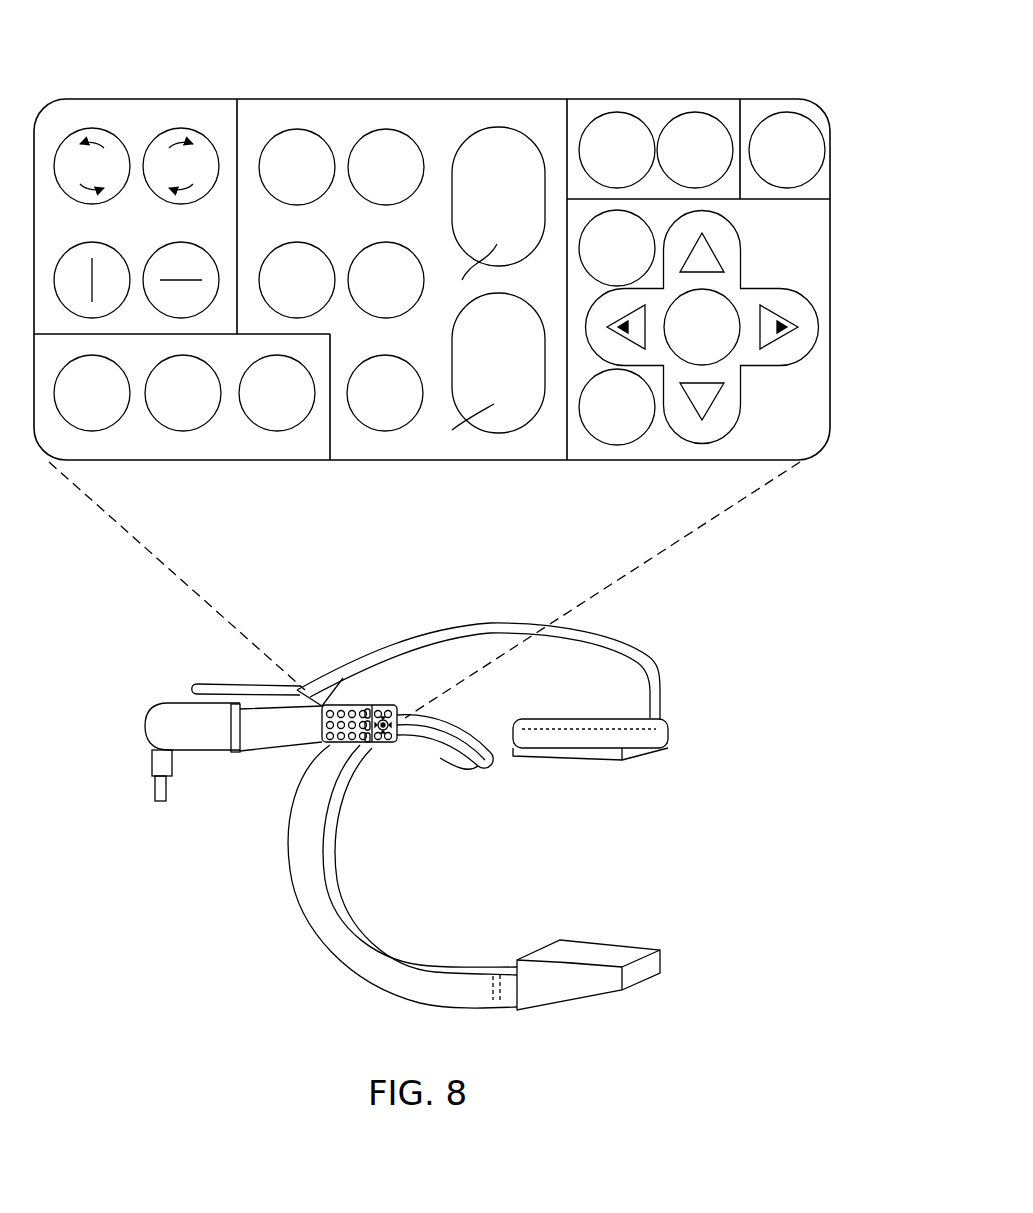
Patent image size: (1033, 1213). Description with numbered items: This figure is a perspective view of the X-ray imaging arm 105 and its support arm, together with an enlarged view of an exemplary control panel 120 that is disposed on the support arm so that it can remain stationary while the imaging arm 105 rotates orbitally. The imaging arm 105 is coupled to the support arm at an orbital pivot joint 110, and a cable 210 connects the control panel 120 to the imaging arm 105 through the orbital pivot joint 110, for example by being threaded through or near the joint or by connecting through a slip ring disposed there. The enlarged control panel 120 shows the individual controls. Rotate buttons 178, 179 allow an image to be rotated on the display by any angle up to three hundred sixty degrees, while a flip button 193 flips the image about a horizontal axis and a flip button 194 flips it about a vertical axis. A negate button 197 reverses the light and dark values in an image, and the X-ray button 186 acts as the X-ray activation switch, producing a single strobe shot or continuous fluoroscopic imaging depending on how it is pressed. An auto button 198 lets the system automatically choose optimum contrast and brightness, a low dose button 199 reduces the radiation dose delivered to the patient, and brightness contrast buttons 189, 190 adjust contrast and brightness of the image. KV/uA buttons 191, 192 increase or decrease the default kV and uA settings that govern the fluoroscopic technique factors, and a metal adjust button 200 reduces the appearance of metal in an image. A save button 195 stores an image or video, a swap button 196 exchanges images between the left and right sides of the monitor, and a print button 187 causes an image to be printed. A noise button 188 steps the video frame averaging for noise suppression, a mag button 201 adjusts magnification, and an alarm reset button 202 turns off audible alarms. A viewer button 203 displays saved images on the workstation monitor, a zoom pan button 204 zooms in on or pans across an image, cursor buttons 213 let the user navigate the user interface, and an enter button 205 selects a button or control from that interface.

The control panel 120 is at (120, 52).
The rotate button 179 is at (115, 146).
The rotate button 178 is at (204, 146).
The flip button 194 is at (115, 262).
The flip button 193 is at (190, 248).
The negate button 197 is at (320, 148).
The X-ray button 186 is at (410, 148).
The auto button 198 is at (325, 262).
The low dose button 199 is at (395, 248).
The brightness contrast button 189 is at (505, 128).
The brightness contrast button 190 is at (467, 270).
The KV/uA button 191 is at (505, 320).
The KV/uA button 192 is at (458, 430).
The metal adjust button 200 is at (387, 363).
The save button 195 is at (88, 426).
The swap button 196 is at (178, 426).
The print button 187 is at (268, 426).
The noise button 188 is at (640, 130).
The mag button 201 is at (696, 120).
The alarm reset button 202 is at (815, 128).
The viewer button 203 is at (640, 236).
The zoom pan button 204 is at (622, 444).
The enter button 205 is at (722, 310).
The cursor buttons 213 is at (788, 338).
The X-ray imaging arm 105 is at (613, 685).
The orbital pivot joint 110 is at (504, 774).
The cable 210 is at (437, 757).